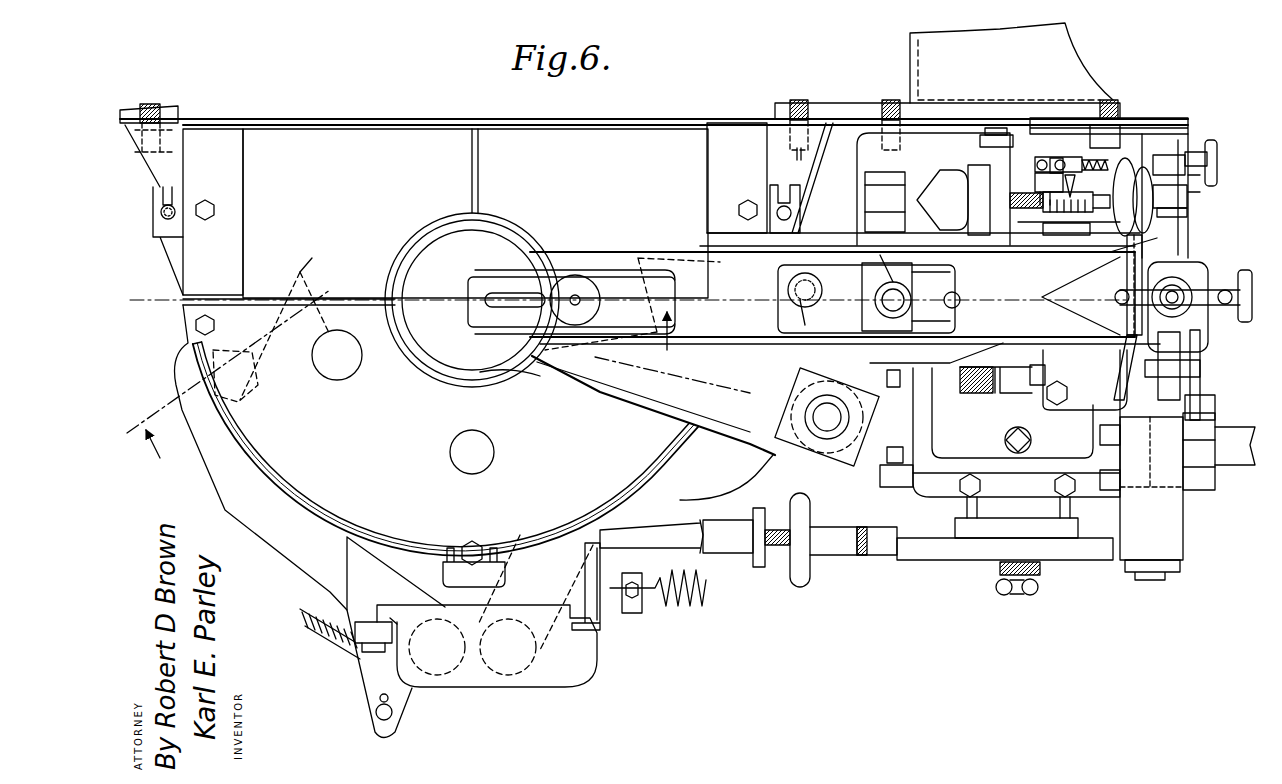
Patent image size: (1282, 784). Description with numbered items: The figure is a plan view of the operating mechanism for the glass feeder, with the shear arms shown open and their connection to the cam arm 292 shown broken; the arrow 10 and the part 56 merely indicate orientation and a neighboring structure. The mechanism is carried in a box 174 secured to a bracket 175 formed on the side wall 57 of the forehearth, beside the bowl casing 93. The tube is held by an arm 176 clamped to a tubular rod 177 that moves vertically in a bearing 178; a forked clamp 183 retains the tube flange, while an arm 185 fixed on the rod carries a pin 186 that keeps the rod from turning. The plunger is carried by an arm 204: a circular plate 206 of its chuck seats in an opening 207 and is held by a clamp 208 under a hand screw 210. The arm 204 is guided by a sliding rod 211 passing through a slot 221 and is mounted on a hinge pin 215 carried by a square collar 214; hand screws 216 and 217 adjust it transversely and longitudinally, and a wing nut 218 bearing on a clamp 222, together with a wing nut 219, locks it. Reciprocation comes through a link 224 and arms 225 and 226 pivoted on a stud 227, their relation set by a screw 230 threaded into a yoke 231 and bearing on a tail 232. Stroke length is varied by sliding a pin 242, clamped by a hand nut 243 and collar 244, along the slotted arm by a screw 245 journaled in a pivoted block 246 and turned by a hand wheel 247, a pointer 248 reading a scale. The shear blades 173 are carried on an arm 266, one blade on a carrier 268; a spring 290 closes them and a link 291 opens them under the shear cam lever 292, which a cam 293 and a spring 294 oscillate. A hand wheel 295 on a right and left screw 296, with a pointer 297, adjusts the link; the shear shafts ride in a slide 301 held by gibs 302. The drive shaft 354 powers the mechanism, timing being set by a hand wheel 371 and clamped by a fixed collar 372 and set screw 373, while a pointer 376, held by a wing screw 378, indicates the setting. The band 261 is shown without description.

The direction arrows 10 is at (438, 386).
The mounting bracket 56 is at (178, 110).
The side wall 57 is at (1070, 30).
The bowl casing 93 is at (160, 192).
The shear blades 173 is at (660, 250).
The box 174 is at (1140, 125).
The bracket 175 is at (1132, 102).
The arm 176 is at (595, 385).
The tubular rod 177 is at (800, 448).
The bearing 178 is at (910, 434).
The forked clamp 183 is at (558, 362).
The arm 185 is at (790, 315).
The pin 186 is at (790, 282).
The arm 204 is at (720, 257).
The circular plate 206 is at (438, 252).
The opening 207 is at (425, 263).
The clamp 208 is at (605, 275).
The hand screw 210 is at (578, 275).
The sliding rod 211 is at (863, 255).
The square collar 214 is at (1118, 318).
The hinge pin 215 is at (1150, 262).
The hand screw 216 is at (1145, 368).
The hand screw 217 is at (1242, 272).
The wing nut 218 is at (958, 298).
The wing nut 219 is at (1116, 295).
The slot 221 is at (940, 280).
The clamp 222 is at (890, 264).
The link 224 is at (867, 222).
The arm 225 is at (867, 199).
The arm 226 is at (1190, 195).
The stud 227 is at (982, 132).
The screw 230 is at (1066, 150).
The yoke 231 is at (982, 180).
The tail 232 is at (940, 197).
The pin 242 is at (1062, 242).
The hand nut 243 is at (1042, 120).
The collar 244 is at (1038, 160).
The screw 245 is at (1160, 155).
The pivoted block 246 is at (1150, 165).
The hand wheel 247 is at (1240, 135).
The pointer 248 is at (1085, 152).
The arc band 261 is at (540, 512).
The arm 266 is at (262, 540).
The carrier 268 is at (262, 386).
The spring 290 is at (300, 620).
The link 291 is at (712, 553).
The shear cam lever 292 is at (1183, 537).
The cam 293 is at (937, 562).
The spring 294 is at (678, 607).
The hand wheel 295 is at (802, 590).
The right and left screw 296 is at (775, 556).
The pointer 297 is at (882, 548).
The slide 301 is at (490, 690).
The gibs 302 is at (590, 630).
The shaft 354 is at (1232, 472).
The hand wheel 371 is at (1185, 335).
The fixed collar 372 is at (1210, 350).
The set screw 373 is at (1222, 392).
The pointer 376 is at (1042, 570).
The wing screw 378 is at (1005, 596).